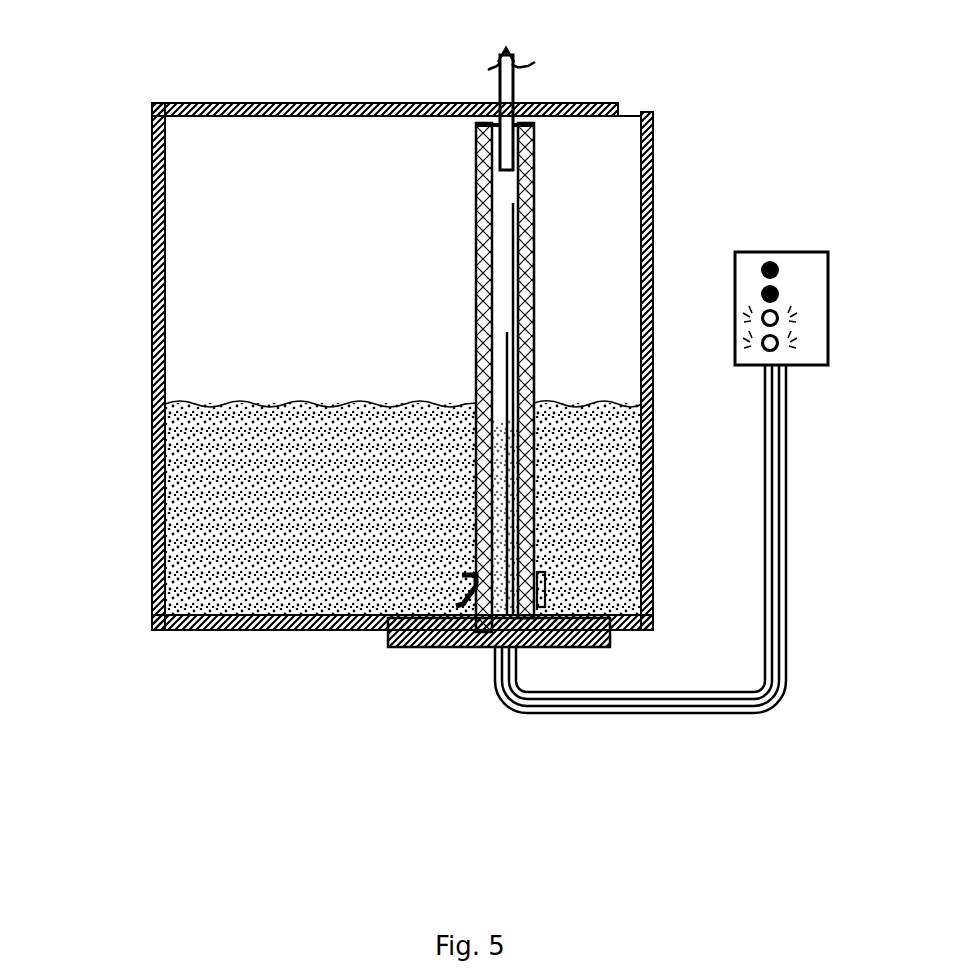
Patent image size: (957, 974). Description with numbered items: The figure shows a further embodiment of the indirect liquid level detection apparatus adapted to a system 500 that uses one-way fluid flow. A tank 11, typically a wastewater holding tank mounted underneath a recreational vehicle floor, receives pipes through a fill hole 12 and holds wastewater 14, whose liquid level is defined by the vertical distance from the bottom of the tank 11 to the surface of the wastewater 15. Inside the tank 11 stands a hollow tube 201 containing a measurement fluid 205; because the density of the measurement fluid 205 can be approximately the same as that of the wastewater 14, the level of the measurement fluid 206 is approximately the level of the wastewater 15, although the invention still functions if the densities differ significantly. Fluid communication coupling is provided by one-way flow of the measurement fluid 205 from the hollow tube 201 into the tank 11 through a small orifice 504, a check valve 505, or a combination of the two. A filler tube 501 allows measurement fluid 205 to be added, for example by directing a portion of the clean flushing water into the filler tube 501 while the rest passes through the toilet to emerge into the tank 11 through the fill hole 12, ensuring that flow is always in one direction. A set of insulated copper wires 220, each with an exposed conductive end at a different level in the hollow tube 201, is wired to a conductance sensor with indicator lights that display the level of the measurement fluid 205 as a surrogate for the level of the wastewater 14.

The tank 11 is at (144, 170).
The fill hole 12 is at (205, 103).
The wastewater 14 is at (207, 528).
The surface of the wastewater 15 is at (212, 403).
The hollow tube 201 is at (476, 272).
The measurement fluid 205 is at (496, 428).
The level of the measurement fluid 206 is at (476, 365).
The insulated copper wires 220 is at (673, 716).
The system 500 is at (806, 114).
The filler tube 501 is at (498, 88).
The small orifice 504 is at (465, 600).
The check valve 505 is at (470, 575).